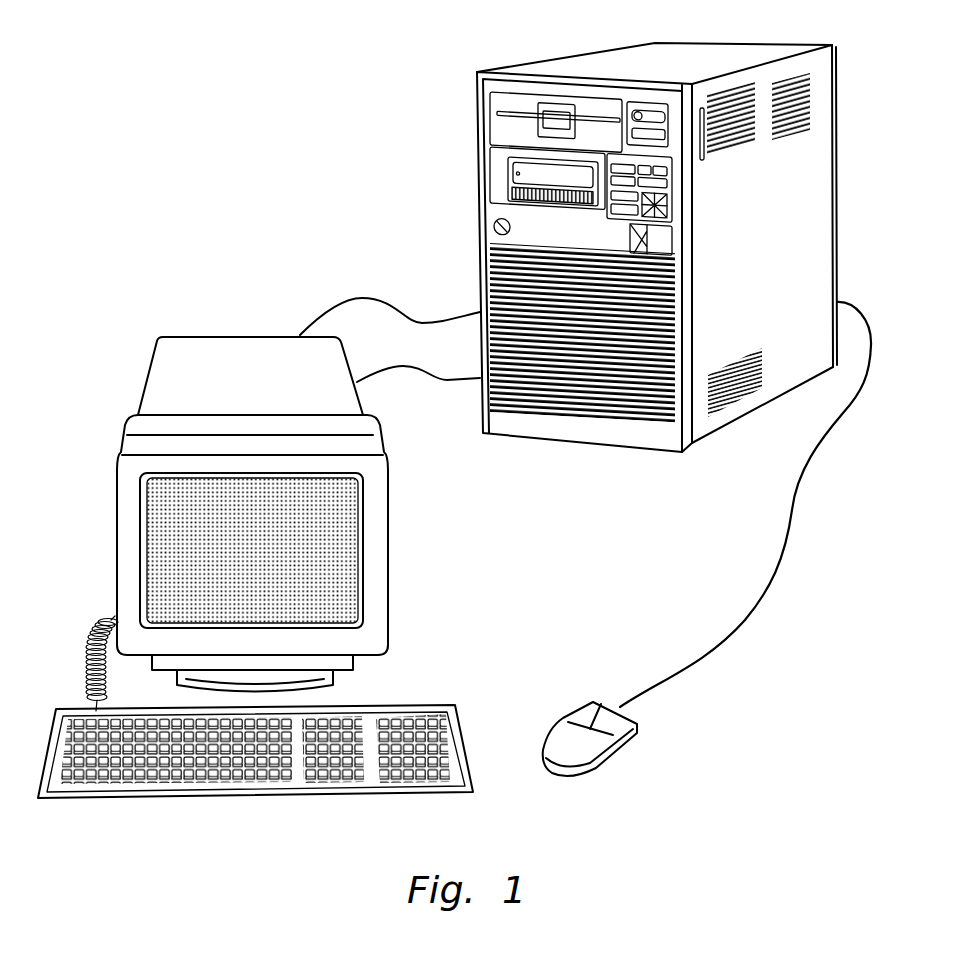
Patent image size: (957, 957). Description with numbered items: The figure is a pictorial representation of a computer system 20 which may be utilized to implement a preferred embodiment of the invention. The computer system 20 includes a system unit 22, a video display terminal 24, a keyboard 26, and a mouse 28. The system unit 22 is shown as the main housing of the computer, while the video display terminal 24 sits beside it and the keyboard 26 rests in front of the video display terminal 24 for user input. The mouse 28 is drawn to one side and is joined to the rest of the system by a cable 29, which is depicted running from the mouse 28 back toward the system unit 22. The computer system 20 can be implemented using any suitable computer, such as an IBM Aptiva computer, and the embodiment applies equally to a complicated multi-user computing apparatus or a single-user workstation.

The computer system 20 is at (276, 219).
The system unit 22 is at (497, 212).
The video display terminal 24 is at (262, 357).
The keyboard 26 is at (287, 792).
The mouse 28 is at (598, 758).
The mouse cable 29 is at (718, 648).